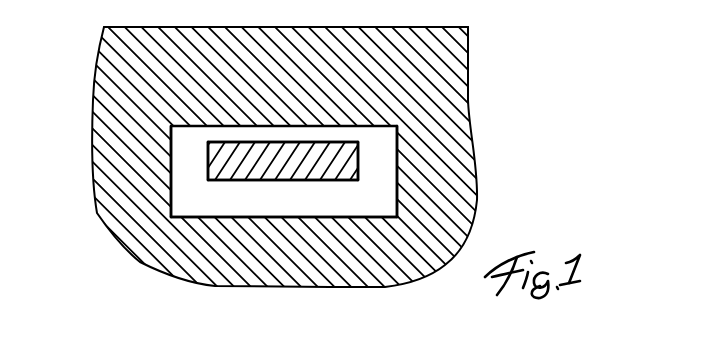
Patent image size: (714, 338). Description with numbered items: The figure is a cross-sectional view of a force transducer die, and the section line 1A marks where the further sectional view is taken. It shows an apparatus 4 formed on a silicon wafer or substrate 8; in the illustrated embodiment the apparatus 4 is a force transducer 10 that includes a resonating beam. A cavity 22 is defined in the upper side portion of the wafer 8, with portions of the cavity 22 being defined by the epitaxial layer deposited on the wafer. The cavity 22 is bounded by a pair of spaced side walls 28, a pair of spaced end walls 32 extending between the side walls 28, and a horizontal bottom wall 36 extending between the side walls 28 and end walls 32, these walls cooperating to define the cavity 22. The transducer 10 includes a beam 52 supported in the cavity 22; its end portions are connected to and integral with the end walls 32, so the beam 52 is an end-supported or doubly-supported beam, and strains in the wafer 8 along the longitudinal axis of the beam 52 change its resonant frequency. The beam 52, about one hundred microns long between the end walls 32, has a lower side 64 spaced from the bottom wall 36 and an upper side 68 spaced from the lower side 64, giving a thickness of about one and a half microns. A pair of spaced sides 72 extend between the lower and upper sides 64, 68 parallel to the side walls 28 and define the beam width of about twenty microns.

The apparatus 4 is at (485, 64).
The force transducer 10 is at (499, 81).
The silicon wafer or substrate 8 is at (452, 205).
The end walls 32 is at (381, 145).
The side walls 28 is at (178, 197).
The bottom wall 36 is at (264, 209).
The beam 52 is at (255, 165).
The lower side 64 is at (318, 183).
The upper side 68 is at (228, 139).
The sides 72 is at (205, 169).
The cavity 22 is at (386, 178).
The section line 1A is at (52, 158).